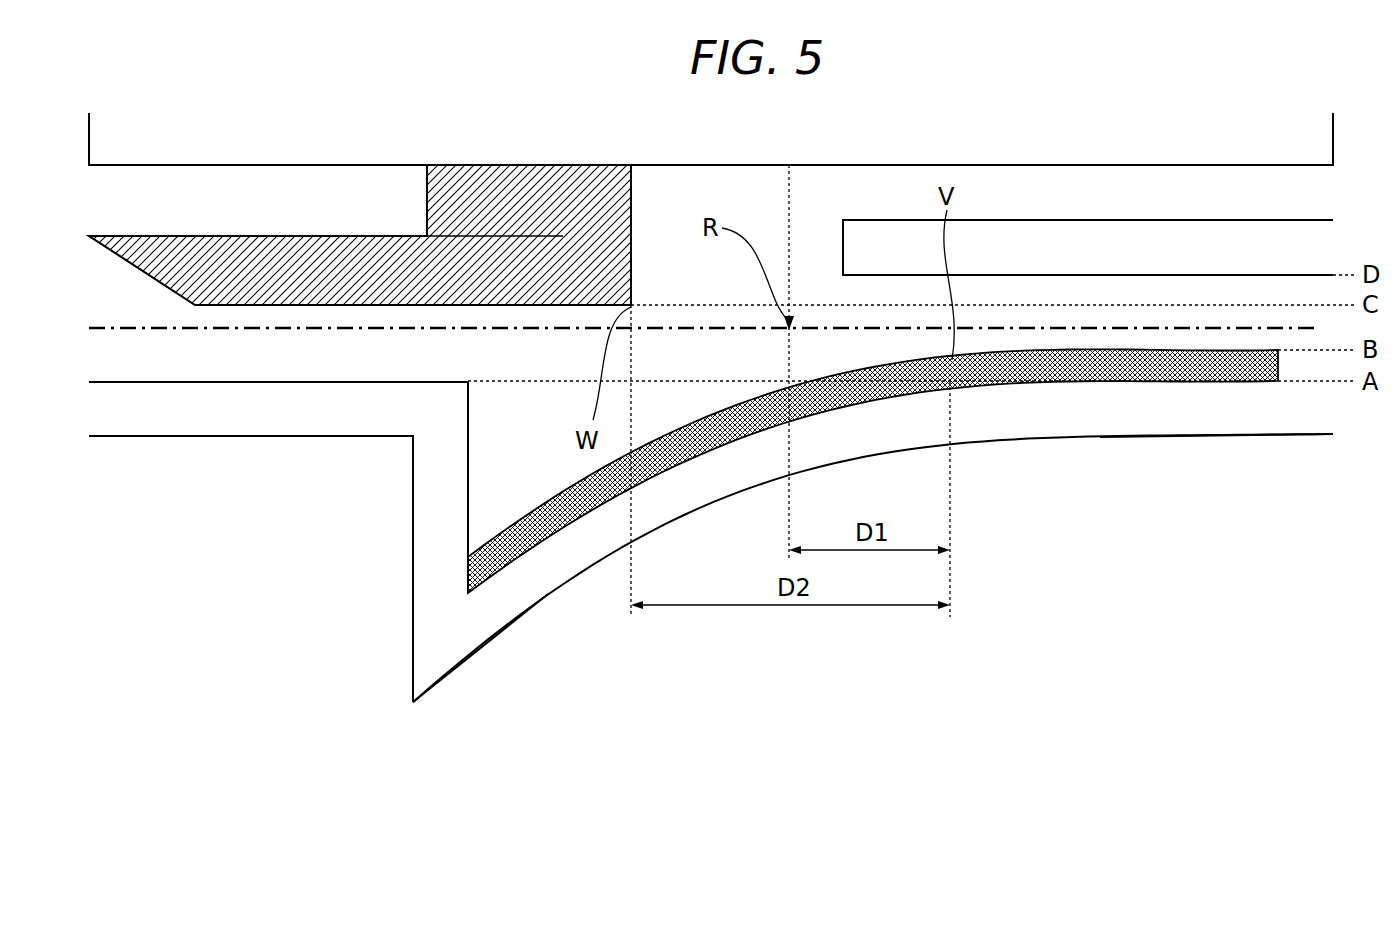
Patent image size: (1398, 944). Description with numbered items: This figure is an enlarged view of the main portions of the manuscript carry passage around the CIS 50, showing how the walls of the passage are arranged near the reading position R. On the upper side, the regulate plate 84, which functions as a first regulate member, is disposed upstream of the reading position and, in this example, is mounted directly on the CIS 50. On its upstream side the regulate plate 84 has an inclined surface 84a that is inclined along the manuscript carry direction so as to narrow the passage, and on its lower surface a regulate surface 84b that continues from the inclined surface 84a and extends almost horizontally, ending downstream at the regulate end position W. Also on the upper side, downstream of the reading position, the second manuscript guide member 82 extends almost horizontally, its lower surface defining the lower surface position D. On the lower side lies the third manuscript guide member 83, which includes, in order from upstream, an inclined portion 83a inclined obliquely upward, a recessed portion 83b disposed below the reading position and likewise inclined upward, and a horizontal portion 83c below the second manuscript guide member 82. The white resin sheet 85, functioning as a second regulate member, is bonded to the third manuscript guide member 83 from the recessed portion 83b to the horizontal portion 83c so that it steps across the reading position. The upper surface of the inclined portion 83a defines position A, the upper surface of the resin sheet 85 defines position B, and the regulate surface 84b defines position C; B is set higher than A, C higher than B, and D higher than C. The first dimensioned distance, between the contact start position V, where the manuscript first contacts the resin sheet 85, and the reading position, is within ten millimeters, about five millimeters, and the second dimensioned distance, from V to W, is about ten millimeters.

The CIS 50 is at (655, 170).
The second manuscript guide member 82 is at (830, 246).
The third manuscript guide member 83 is at (1096, 462).
The inclined portion 83a is at (198, 410).
The recessed portion 83b is at (497, 620).
The horizontal portion 83c is at (1305, 408).
The regulate plate 84 is at (398, 207).
The inclined surface 84a is at (142, 276).
The regulate surface 84b is at (358, 307).
The resin sheet 85 is at (553, 535).